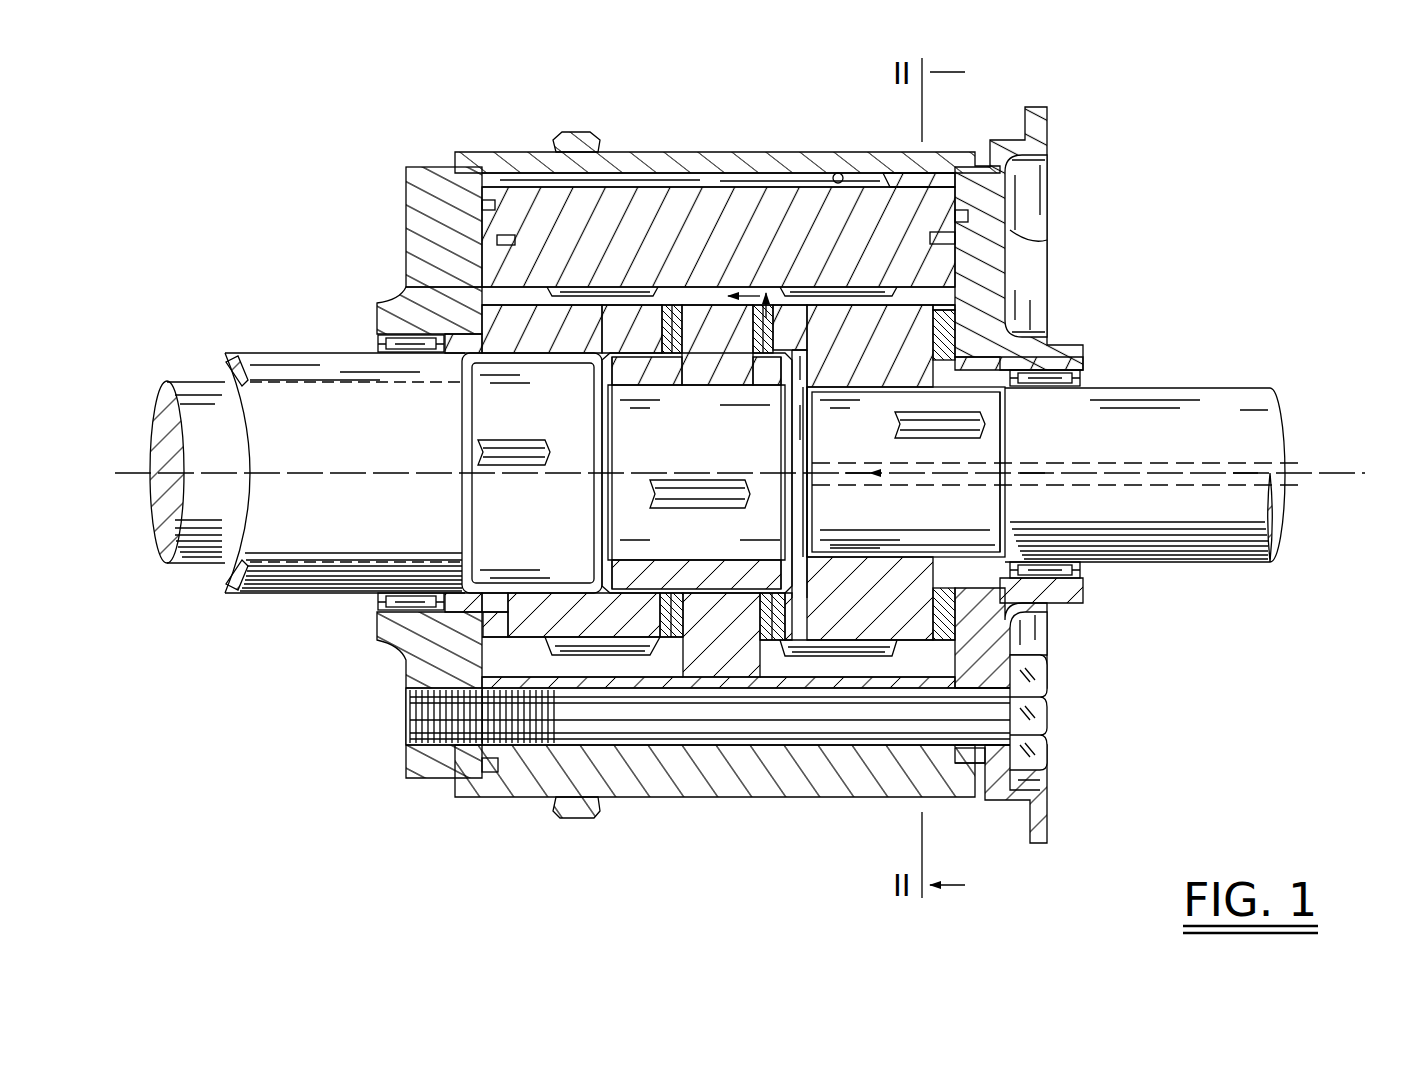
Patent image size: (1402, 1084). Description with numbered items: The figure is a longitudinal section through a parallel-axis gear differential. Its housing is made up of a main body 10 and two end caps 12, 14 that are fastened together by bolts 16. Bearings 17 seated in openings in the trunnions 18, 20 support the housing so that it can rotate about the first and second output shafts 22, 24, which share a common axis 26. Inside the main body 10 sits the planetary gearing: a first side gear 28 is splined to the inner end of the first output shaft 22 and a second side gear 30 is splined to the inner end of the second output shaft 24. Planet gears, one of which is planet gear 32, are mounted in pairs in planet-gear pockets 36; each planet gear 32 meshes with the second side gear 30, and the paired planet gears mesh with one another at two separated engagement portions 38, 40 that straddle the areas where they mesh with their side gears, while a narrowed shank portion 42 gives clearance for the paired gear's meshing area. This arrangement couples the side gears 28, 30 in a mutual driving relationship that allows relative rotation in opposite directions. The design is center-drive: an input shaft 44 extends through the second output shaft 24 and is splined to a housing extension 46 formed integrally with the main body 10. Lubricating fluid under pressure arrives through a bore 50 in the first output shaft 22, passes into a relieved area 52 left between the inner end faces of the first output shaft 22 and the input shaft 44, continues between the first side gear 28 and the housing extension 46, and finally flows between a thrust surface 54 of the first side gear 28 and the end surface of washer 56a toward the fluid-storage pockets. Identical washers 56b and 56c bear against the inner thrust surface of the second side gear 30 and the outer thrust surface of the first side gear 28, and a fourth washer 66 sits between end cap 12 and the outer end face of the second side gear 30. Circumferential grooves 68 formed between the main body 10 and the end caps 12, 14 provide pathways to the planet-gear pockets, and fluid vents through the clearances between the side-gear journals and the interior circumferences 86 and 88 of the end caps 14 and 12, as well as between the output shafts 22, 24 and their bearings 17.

The main body 10 is at (720, 160).
The end cap 12 is at (420, 206).
The end cap 14 is at (985, 272).
The bolts 16 is at (1050, 727).
The bearings 17 is at (392, 320).
The trunnion 18 is at (420, 645).
The trunnion 20 is at (1060, 600).
The first output shaft 22 is at (1162, 398).
The second output shaft 24 is at (318, 585).
The common axis 26 is at (1303, 475).
The first side gear 28 is at (869, 362).
The second side gear 30 is at (492, 474).
The planet gear 32 is at (888, 207).
The planet-gear pocket 36 is at (840, 174).
The engagement portion 38 is at (562, 348).
The engagement portion 40 is at (915, 168).
The narrowed shank portion 42 is at (790, 185).
The input shaft 44 is at (195, 408).
The housing extension 46 is at (697, 474).
The bore 50 is at (1145, 472).
The relieved area 52 is at (806, 555).
The thrust surface 54 is at (744, 596).
The washer 56a is at (762, 342).
The washer 56b is at (678, 342).
The washer 56c is at (960, 332).
The fourth washer 66 is at (430, 306).
The circumferential grooves 68 is at (500, 170).
The interior circumference 86 is at (972, 597).
The interior circumference 88 is at (486, 362).